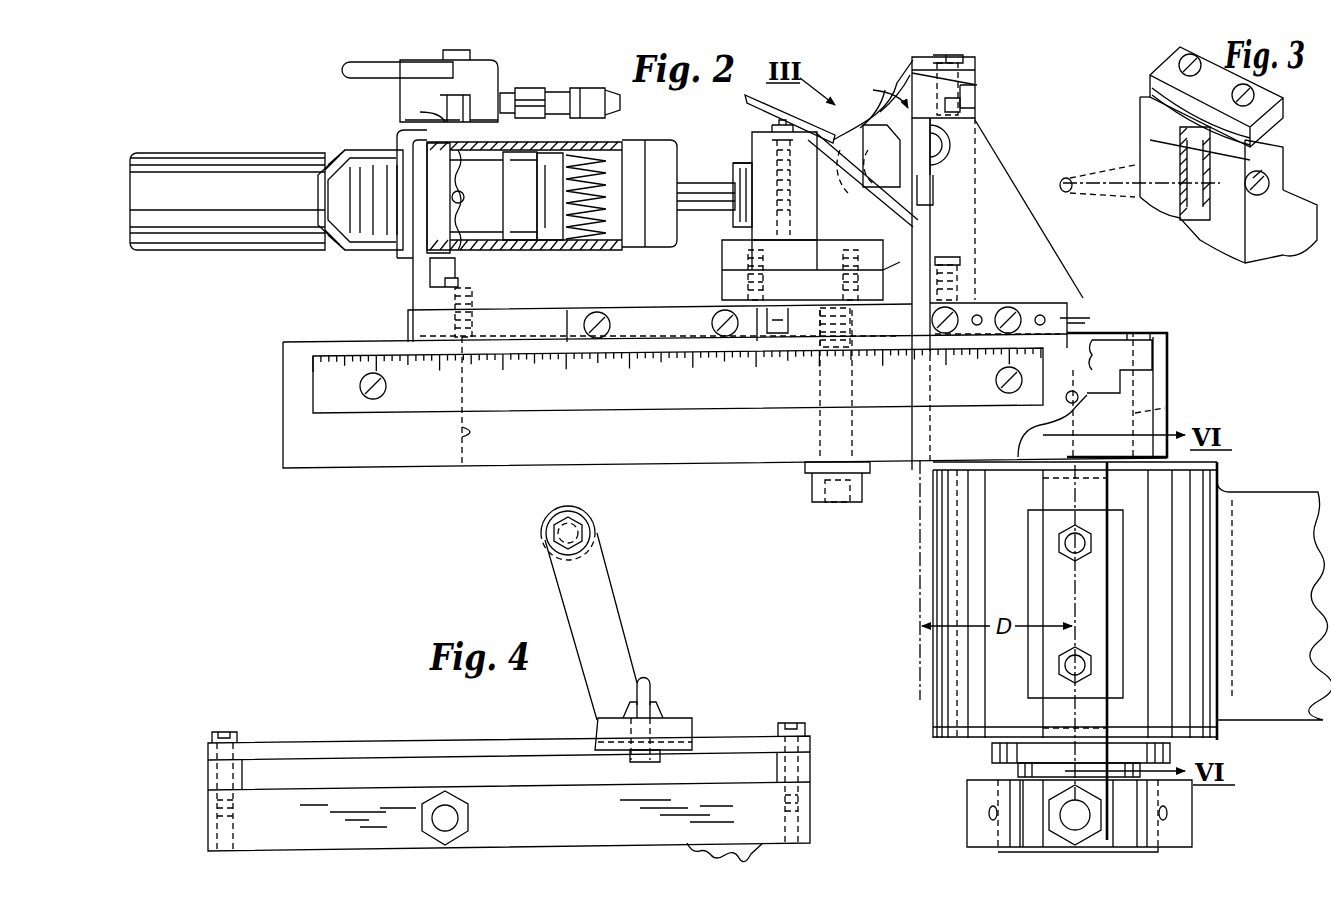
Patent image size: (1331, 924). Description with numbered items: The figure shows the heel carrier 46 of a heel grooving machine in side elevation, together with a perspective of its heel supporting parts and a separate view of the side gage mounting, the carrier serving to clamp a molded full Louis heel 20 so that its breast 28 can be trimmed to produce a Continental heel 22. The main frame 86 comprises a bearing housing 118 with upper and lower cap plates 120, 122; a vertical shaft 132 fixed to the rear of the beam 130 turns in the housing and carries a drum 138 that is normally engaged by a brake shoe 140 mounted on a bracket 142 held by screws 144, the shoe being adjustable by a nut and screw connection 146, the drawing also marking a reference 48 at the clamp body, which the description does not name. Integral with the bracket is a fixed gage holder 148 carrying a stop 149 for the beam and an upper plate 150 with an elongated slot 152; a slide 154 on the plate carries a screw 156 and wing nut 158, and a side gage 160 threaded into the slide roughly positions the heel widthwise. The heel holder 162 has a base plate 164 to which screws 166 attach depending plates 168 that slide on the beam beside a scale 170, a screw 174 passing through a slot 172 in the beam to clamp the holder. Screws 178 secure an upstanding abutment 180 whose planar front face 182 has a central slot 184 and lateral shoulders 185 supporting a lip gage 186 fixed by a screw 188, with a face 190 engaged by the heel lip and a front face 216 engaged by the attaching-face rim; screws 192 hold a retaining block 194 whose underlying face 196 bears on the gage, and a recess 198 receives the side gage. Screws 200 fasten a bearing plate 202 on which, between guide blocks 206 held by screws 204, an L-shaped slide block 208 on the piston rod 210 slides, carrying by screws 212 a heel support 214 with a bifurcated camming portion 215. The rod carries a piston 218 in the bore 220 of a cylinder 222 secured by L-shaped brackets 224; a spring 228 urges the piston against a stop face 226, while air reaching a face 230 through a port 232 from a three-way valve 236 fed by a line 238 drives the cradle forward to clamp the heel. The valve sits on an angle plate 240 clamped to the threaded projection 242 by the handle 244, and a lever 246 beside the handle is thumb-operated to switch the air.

In FIG. 2, the molded full Louis heel 20 is at (818, 130).
In FIG. 3, the Continental heel 22 is at (1110, 193).
In FIG. 2, the breast 28 is at (815, 115).
In FIG. 2, the heel carrier 46 is at (245, 410).
In FIG. 2, the clamp centerline 48 is at (1075, 503).
In FIG. 2, the main frame 86 is at (1275, 505).
In FIG. 2, the bearing housing 118 is at (950, 673).
In FIG. 2, the upper cap plate 120 is at (1015, 485).
In FIG. 2, the lower cap plate 122 is at (940, 735).
In FIG. 2, the beam 130 is at (1168, 371).
In FIG. 2, the vertical shaft 132 is at (1170, 410).
In FIG. 2, the drum 138 is at (1015, 772).
In FIG. 2, the brake shoe 140 is at (978, 825).
In FIG. 2, the bracket 142 is at (1050, 570).
In FIG. 4, the bracket 142 is at (690, 845).
In FIG. 2, the screws 144 is at (1060, 545).
In FIG. 2, the nut and screw connection 146 is at (1090, 818).
In FIG. 2, the fixed gage holder 148 is at (1170, 395).
In FIG. 4, the fixed gage holder 148 is at (205, 820).
In FIG. 4, the stop 149 is at (460, 815).
In FIG. 2, the upper plate 150 is at (1140, 352).
In FIG. 4, the upper plate 150 is at (262, 745).
In FIG. 4, the elongated slot 152 is at (735, 745).
In FIG. 4, the slide 154 is at (672, 718).
In FIG. 4, the screw 156 is at (630, 758).
In FIG. 4, the wing nut 158 is at (650, 690).
In FIG. 4, the side gage 160 is at (560, 533).
In FIG. 2, the heel holder 162 is at (718, 132).
In FIG. 2, the base plate 164 is at (1090, 325).
In FIG. 2, the screws 166 is at (610, 325).
In FIG. 2, the depending plates 168 is at (568, 326).
In FIG. 2, the scale 170 is at (675, 413).
In FIG. 2, the slot 172 is at (460, 440).
In FIG. 2, the screw 174 is at (820, 458).
In FIG. 2, the screws 178 is at (958, 268).
In FIG. 2, the upstanding abutment 180 is at (1030, 244).
In FIG. 3, the upstanding abutment 180 is at (1290, 236).
In FIG. 2, the planar front face 182 is at (910, 268).
In FIG. 3, the planar front face 182 is at (1232, 240).
In FIG. 2, the central slot 184 is at (925, 195).
In FIG. 3, the central slot 184 is at (1195, 212).
In FIG. 2, the lateral shoulders 185 is at (985, 135).
In FIG. 3, the lateral shoulders 185 is at (1262, 130).
In FIG. 2, the lip gage 186 is at (910, 72).
In FIG. 3, the lip gage 186 is at (1175, 95).
In FIG. 2, the screw 188 is at (975, 110).
In FIG. 3, the screw 188 is at (1160, 140).
In FIG. 2, the face 190 is at (890, 80).
In FIG. 3, the face 190 is at (1158, 107).
In FIG. 2, the screws 192 is at (975, 60).
In FIG. 3, the screws 192 is at (1180, 62).
In FIG. 2, the retaining block 194 is at (975, 80).
In FIG. 3, the retaining block 194 is at (1275, 115).
In FIG. 2, the underlying face 196 is at (975, 95).
In FIG. 3, the underlying face 196 is at (1210, 110).
In FIG. 2, the recess 198 is at (933, 158).
In FIG. 3, the recess 198 is at (1260, 192).
In FIG. 2, the screws 200 is at (785, 290).
In FIG. 2, the bearing plate 202 is at (868, 295).
In FIG. 2, the screws 204 is at (846, 262).
In FIG. 2, the guide blocks 206 is at (885, 250).
In FIG. 2, the L-shaped slide block 208 is at (775, 186).
In FIG. 2, the piston rod 210 is at (695, 186).
In FIG. 2, the screws 212 is at (775, 130).
In FIG. 2, the heel support 214 is at (880, 195).
In FIG. 2, the bifurcated camming portion 215 is at (848, 185).
In FIG. 2, the front face 216 is at (875, 85).
In FIG. 3, the front face 216 is at (1167, 118).
In FIG. 2, the piston 218 is at (550, 242).
In FIG. 2, the bore 220 is at (462, 250).
In FIG. 2, the cylinder 222 is at (560, 143).
In FIG. 2, the L-shaped brackets 224 is at (412, 295).
In FIG. 2, the stop face 226 is at (503, 128).
In FIG. 2, the spring 228 is at (588, 243).
In FIG. 2, the face 230 is at (530, 240).
In FIG. 2, the port 232 is at (480, 208).
In FIG. 2, the three-way valve 236 is at (400, 100).
In FIG. 2, the line 238 is at (610, 88).
In FIG. 2, the angle plate 240 is at (398, 136).
In FIG. 2, the threaded projection 242 is at (350, 238).
In FIG. 2, the handle 244 is at (205, 160).
In FIG. 2, the lever 246 is at (348, 70).